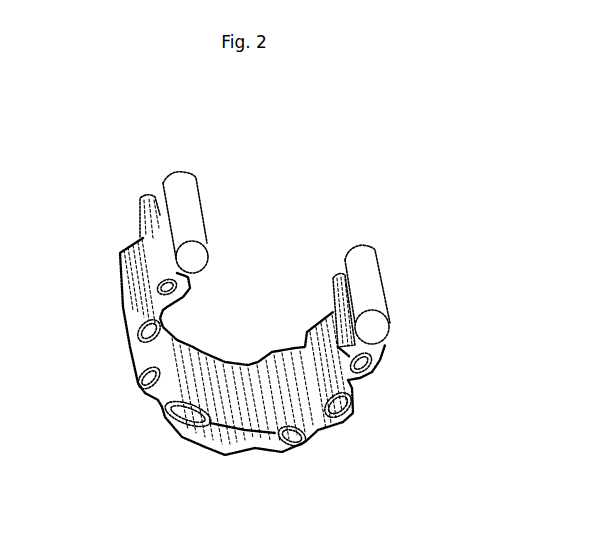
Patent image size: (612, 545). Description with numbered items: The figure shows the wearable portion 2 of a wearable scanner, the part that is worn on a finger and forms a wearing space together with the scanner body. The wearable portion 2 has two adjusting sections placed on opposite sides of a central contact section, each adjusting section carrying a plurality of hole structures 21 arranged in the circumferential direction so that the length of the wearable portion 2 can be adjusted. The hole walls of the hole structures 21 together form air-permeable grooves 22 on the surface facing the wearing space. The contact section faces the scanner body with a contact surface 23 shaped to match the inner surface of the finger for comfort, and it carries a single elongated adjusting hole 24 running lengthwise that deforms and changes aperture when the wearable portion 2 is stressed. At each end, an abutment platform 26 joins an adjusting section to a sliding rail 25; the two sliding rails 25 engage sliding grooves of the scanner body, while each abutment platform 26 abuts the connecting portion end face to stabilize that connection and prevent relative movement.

The wearable portion 2 is at (117, 116).
The hole structures 21 is at (152, 333).
The air-permeable grooves 22 is at (162, 310).
The contact surface 23 is at (208, 395).
The adjusting hole 24 is at (215, 431).
The sliding rails 25 is at (183, 201).
The abutment platform 26 is at (153, 222).